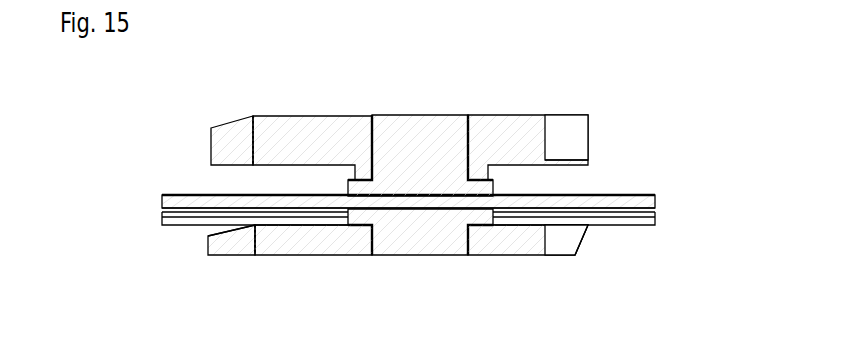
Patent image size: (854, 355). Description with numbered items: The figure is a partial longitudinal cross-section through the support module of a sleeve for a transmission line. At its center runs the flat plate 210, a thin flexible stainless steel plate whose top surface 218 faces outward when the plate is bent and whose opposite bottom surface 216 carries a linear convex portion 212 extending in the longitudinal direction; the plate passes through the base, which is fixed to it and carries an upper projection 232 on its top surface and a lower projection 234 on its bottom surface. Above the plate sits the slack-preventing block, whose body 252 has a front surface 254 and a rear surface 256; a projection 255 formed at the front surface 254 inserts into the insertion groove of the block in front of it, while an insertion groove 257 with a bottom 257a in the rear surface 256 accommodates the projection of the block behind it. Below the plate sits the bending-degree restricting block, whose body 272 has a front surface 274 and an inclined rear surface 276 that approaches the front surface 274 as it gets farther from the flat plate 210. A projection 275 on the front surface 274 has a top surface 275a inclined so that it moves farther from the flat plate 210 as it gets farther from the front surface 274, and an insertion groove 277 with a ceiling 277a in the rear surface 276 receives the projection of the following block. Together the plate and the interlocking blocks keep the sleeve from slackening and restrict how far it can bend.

The flat plate 210 is at (613, 197).
The linear convex portion 212 is at (628, 216).
The bottom surface 216 is at (207, 214).
The top surface 218 is at (220, 195).
The upper projection 232 is at (428, 115).
The lower projection 234 is at (420, 252).
The body 252 is at (318, 122).
The front surface 254 is at (253, 138).
The projection 255 is at (215, 143).
The rear surface 256 is at (575, 129).
The insertion groove 257 is at (588, 131).
The bottom 257a is at (583, 152).
The body 272 is at (320, 250).
The front surface 274 is at (255, 250).
The projection 275 is at (228, 250).
The top surface 275a is at (226, 232).
The rear surface 276 is at (588, 252).
The insertion groove 277 is at (556, 238).
The ceiling 277a is at (587, 235).